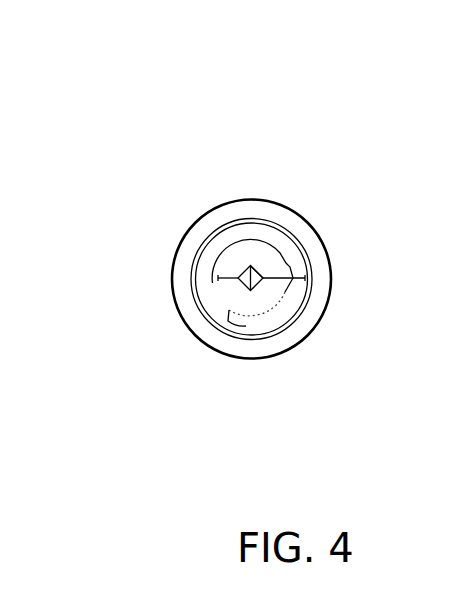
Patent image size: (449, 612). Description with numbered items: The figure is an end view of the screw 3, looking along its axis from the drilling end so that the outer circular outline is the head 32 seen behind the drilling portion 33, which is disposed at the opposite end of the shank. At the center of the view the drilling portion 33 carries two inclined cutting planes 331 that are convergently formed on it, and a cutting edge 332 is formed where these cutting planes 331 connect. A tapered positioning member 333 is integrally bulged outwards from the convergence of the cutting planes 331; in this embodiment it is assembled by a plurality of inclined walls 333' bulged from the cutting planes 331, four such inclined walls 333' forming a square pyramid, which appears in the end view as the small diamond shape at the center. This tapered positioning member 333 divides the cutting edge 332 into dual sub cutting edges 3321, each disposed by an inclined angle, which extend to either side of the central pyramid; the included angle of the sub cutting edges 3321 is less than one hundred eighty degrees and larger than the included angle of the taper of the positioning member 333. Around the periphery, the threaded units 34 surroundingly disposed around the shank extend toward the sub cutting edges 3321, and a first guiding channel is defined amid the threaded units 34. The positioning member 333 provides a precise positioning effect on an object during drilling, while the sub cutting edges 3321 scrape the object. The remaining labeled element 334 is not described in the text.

The screw 3 is at (122, 143).
The head 32 is at (256, 200).
The drilling portion 33 is at (300, 251).
The inclined cutting planes 331 is at (245, 265).
The cutting edge 332 is at (210, 275).
The sub cutting edges 3321 is at (222, 280).
The tapered positioning member 333 is at (299, 353).
The inclined walls 333' is at (307, 219).
The right slot 334 is at (305, 277).
The threaded units 34 is at (235, 327).